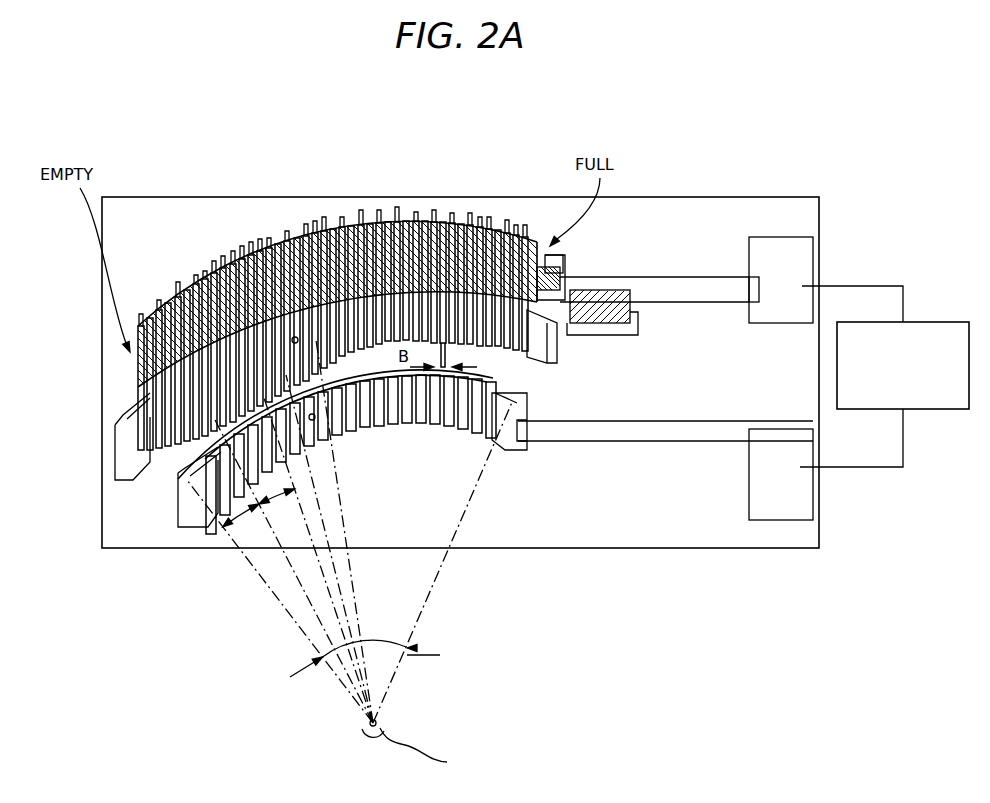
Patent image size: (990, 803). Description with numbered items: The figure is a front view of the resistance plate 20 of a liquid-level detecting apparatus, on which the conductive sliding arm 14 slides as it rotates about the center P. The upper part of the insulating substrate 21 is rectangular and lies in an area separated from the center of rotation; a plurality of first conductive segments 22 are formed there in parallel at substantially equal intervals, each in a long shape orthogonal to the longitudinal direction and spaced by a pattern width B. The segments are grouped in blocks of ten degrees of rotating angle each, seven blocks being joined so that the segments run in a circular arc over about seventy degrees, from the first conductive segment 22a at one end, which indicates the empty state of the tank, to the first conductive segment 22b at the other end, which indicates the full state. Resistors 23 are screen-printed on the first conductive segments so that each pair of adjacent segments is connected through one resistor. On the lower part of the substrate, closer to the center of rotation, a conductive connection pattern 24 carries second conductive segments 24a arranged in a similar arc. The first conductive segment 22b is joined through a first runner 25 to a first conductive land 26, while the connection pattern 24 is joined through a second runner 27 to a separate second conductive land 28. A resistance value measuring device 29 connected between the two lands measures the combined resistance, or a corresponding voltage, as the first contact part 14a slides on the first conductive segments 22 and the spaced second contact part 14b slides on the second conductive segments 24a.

The conductive sliding arm 14 is at (356, 694).
The first contact part 14a is at (316, 420).
The second contact part 14b is at (298, 343).
The resistance plate 20 is at (268, 139).
The insulating substrate 21 is at (793, 207).
The first conductive segments 22 is at (496, 373).
The first conductive segment at one end side 22a is at (168, 458).
The first conductive segment at the other end side 22b is at (520, 367).
The resistors 23 is at (140, 370).
The conductive connection pattern 24 is at (507, 465).
The second conductive segments 24a is at (458, 433).
The first runner 25 is at (702, 283).
The first conductive land 26 is at (802, 262).
The second runner 27 is at (702, 437).
The second conductive land 28 is at (800, 497).
The resistance value measuring device 29 is at (937, 320).